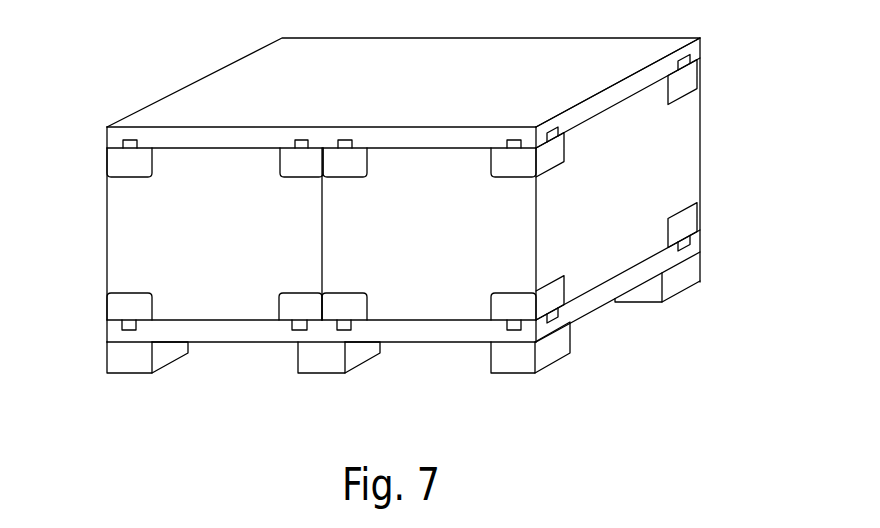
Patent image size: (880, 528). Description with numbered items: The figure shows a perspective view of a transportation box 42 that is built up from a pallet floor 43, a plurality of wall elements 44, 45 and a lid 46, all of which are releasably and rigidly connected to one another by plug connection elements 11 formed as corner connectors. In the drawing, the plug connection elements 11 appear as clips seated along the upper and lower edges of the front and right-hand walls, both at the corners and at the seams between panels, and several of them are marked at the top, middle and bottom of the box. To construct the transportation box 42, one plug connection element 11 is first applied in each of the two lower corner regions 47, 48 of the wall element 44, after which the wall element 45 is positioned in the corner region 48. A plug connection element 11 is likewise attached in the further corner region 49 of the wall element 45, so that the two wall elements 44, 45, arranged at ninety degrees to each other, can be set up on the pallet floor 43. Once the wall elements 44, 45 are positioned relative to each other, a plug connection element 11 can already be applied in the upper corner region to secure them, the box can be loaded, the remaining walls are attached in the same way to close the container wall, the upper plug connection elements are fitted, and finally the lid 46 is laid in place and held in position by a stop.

The plug connection element 11 is at (103, 162).
The transportation box 42 is at (375, 372).
The pallet floor 43 is at (220, 333).
The wall element 44 is at (97, 226).
The wall element 45 is at (710, 150).
The lid 46 is at (212, 98).
The lower corner region 47 is at (105, 390).
The lower corner region 48 is at (467, 372).
The further corner region 49 is at (720, 228).